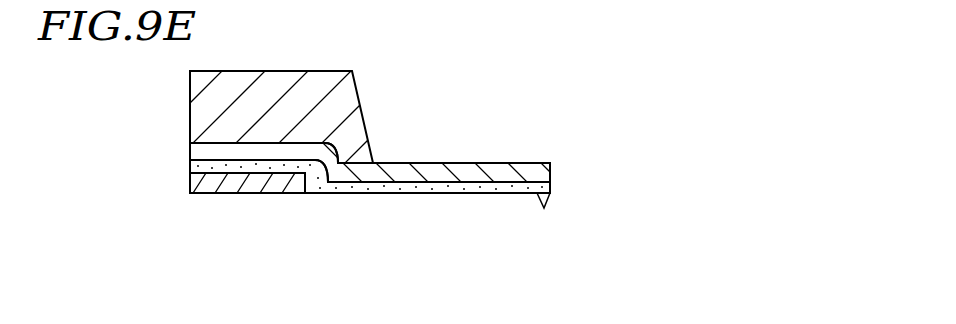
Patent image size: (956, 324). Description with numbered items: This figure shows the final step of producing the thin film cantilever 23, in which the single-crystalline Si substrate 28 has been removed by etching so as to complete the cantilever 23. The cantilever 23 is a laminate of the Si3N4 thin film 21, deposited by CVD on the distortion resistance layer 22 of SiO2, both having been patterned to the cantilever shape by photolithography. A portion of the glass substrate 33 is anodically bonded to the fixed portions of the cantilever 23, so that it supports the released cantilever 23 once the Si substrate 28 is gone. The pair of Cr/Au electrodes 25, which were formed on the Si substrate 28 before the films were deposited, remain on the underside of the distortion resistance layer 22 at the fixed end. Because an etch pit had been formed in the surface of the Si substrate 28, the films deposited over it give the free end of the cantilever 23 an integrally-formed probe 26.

The single-crystalline Si substrate 28 is at (371, 162).
The glass substrate 33 is at (202, 115).
The cantilever 23 is at (371, 106).
The Si3N4 thin film 21 is at (552, 176).
The distortion resistance layer 22 is at (618, 140).
The electrodes 25 is at (246, 193).
The probe 26 is at (543, 204).